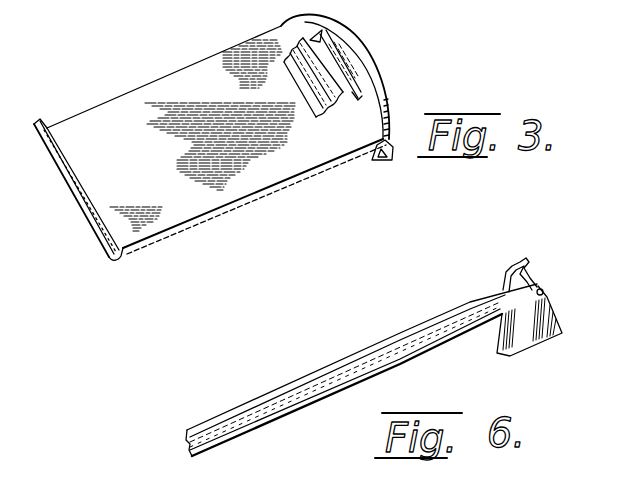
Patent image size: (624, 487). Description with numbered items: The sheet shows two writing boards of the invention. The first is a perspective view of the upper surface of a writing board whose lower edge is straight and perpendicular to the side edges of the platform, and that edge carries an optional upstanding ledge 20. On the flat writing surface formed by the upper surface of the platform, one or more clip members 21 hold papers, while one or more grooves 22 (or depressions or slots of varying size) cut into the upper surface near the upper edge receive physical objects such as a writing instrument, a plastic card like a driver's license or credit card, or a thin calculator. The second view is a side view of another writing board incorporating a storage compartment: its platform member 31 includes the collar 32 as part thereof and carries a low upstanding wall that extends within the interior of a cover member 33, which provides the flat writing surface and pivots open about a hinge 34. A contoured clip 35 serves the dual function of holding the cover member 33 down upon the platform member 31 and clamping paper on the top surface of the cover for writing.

In FIG. 3, the upstanding ledge 20 is at (68, 165).
In FIG. 3, the clip member 21 is at (290, 58).
In FIG. 3, the groove 22 is at (350, 74).
In FIG. 6, the platform member 31 is at (334, 352).
In FIG. 6, the collar 32 is at (558, 320).
In FIG. 6, the cover member 33 is at (452, 310).
In FIG. 6, the hinge 34 is at (187, 445).
In FIG. 6, the clip 35 is at (533, 291).